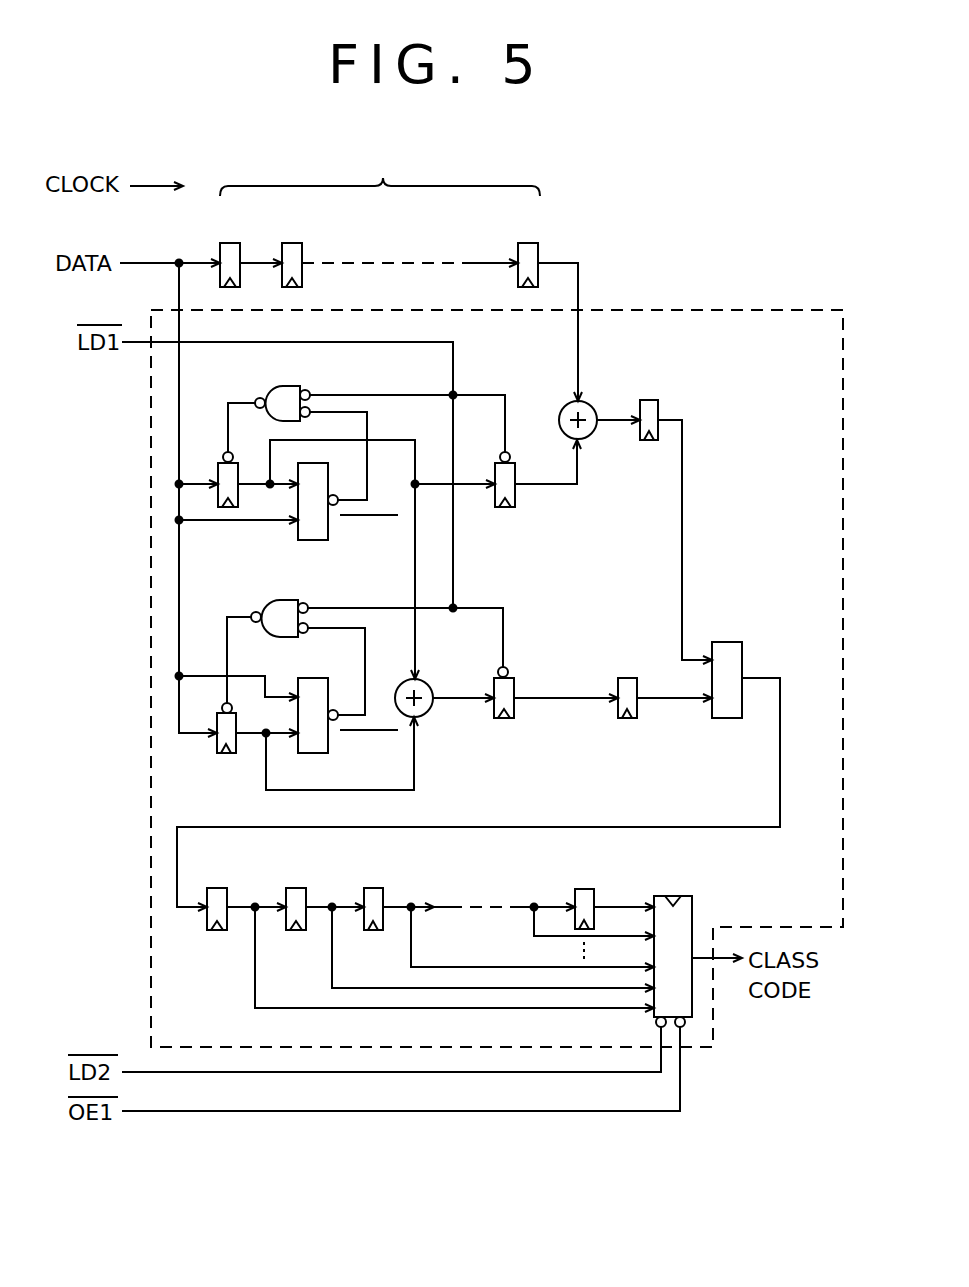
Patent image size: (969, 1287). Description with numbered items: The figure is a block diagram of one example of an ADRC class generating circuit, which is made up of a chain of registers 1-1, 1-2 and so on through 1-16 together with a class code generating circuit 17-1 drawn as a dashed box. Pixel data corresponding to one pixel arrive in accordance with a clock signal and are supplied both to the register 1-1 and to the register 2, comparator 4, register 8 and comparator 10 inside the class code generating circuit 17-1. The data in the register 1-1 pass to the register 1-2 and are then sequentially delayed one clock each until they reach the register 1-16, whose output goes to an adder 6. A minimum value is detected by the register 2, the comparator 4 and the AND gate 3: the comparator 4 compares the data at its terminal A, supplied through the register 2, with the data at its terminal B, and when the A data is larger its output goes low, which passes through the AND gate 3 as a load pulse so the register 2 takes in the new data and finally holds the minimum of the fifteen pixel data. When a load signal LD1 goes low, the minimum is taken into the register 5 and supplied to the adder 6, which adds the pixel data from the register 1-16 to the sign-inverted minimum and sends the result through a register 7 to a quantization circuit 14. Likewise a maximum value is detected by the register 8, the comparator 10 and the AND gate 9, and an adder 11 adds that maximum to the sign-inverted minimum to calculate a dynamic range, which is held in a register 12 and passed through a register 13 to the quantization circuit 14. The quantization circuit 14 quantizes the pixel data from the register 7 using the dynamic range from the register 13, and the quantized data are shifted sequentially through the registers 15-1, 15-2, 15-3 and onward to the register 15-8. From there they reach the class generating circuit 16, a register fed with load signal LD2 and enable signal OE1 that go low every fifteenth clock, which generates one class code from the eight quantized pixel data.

The register 1-1 is at (228, 243).
The register 1-2 is at (303, 247).
The register 1-16 is at (527, 243).
The class generating circuit 16 is at (710, 899).
The class code generating circuit 17-1 is at (649, 308).
The register 2 is at (240, 471).
The AND gate 3 is at (287, 386).
The comparator 4 is at (318, 540).
The register 5 is at (505, 507).
The adder 6 is at (565, 404).
The register 7 is at (649, 440).
The register 8 is at (226, 753).
The AND gate 9 is at (278, 600).
The comparator 10 is at (315, 753).
The adder 11 is at (400, 684).
The register 12 is at (503, 718).
The register 13 is at (627, 718).
The quantization circuit 14 is at (727, 642).
The register 15-1 is at (217, 888).
The register 15-2 is at (296, 888).
The register 15-3 is at (374, 888).
The register 15-8 is at (585, 889).